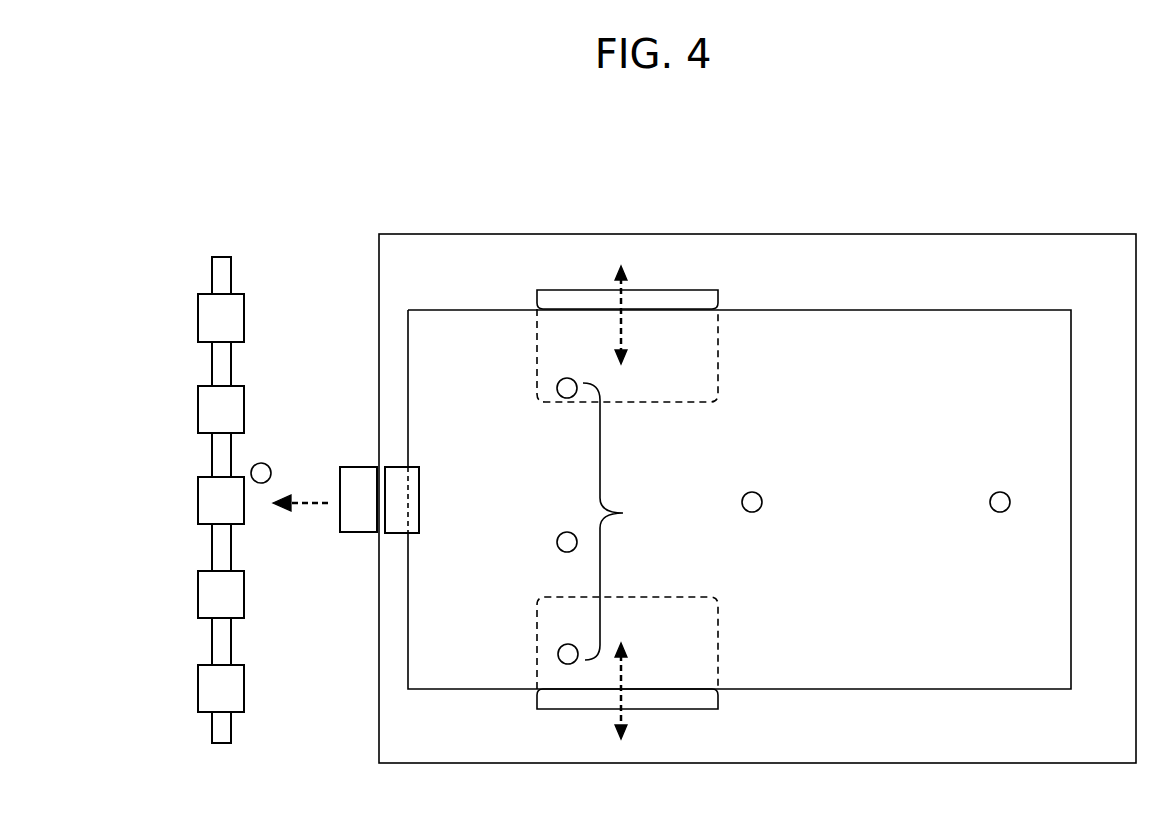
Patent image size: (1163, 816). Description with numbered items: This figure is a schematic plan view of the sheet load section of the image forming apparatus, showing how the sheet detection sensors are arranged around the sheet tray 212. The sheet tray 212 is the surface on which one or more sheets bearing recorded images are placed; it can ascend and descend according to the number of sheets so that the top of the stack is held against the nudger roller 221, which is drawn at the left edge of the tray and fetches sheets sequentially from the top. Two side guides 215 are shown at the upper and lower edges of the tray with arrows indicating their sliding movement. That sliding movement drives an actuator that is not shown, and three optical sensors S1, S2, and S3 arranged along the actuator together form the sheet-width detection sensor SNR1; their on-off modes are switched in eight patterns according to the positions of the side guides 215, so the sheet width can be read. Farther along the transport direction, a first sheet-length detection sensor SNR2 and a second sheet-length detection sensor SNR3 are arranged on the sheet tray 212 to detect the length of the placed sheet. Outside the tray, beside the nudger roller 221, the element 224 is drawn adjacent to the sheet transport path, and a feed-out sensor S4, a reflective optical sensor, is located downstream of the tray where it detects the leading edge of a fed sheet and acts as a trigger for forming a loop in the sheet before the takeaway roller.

The sheet tray 212 is at (877, 258).
The side guides 215 is at (577, 298).
The nudger roller 221 is at (415, 478).
The transfer unit 224 is at (352, 550).
The optical sensor S1 is at (566, 655).
The optical sensor S2 is at (563, 542).
The optical sensor S3 is at (560, 387).
The feed-out sensor S4 is at (264, 467).
The sheet-width detection sensor SNR1 is at (639, 521).
The first sheet-length detection sensor SNR2 is at (751, 501).
The second sheet-length detection sensor SNR3 is at (998, 501).